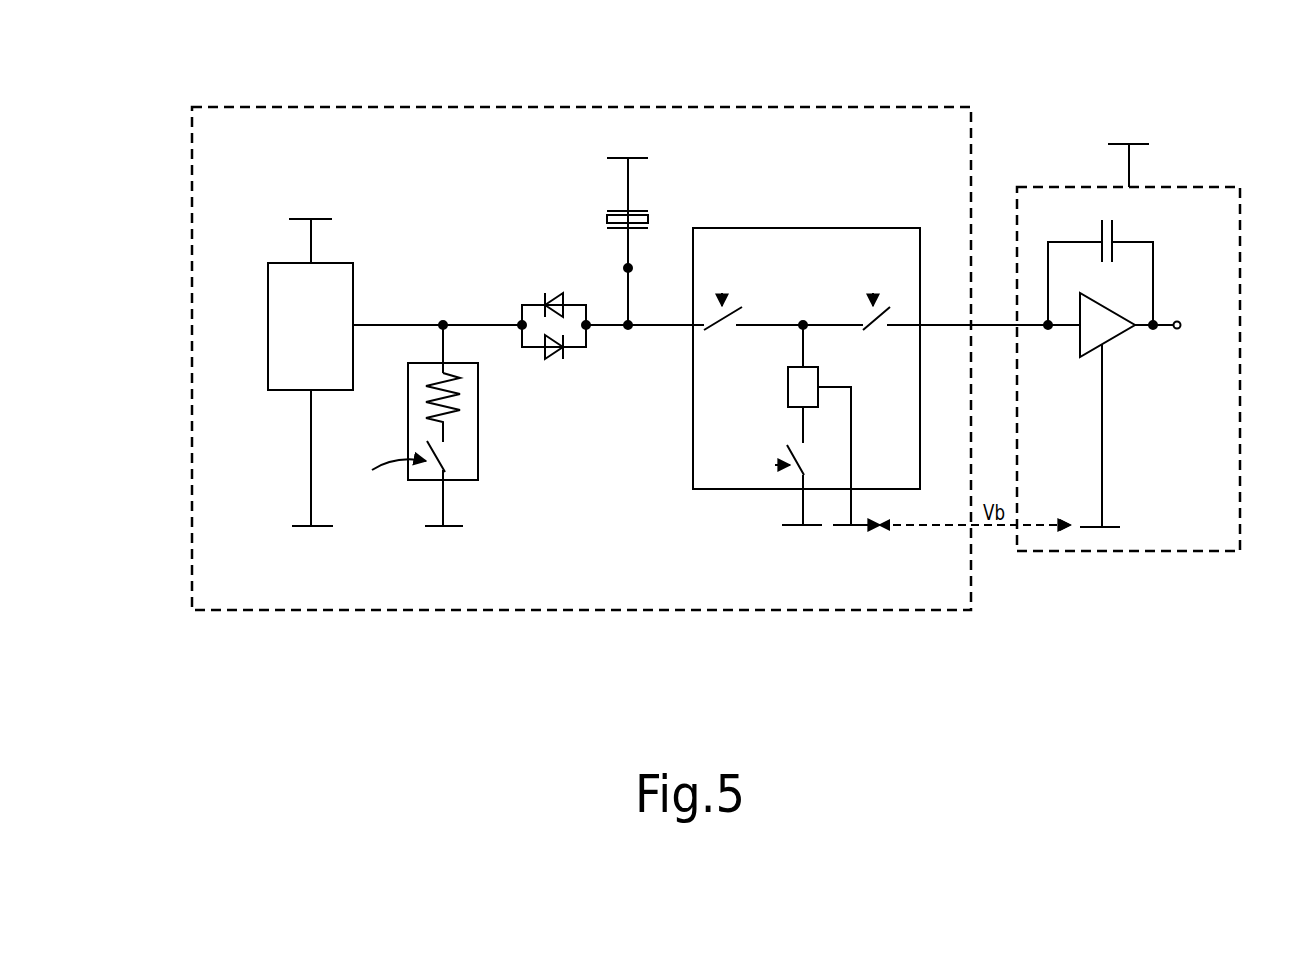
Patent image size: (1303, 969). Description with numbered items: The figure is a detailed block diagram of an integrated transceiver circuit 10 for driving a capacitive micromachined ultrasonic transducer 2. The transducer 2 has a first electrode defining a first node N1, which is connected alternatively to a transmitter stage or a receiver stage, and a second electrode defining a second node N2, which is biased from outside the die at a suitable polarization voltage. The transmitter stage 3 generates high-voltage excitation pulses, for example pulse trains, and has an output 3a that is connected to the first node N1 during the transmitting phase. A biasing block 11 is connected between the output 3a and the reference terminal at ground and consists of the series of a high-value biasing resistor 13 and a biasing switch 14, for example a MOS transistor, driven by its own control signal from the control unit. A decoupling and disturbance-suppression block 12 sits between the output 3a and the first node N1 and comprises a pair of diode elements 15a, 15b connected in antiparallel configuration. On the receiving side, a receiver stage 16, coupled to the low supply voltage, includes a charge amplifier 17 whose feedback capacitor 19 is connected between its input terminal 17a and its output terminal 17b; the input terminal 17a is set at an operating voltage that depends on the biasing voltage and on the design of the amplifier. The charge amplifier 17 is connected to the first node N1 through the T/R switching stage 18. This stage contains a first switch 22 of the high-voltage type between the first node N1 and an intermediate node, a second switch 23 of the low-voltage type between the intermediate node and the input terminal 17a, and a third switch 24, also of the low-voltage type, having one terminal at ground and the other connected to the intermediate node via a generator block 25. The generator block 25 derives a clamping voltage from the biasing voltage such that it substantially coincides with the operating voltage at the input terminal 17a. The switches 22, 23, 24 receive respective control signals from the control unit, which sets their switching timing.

The integrated transceiver circuit 10 is at (238, 86).
The transmitter stage 3 is at (348, 263).
The output 3a is at (443, 318).
The biasing block 11 is at (445, 441).
The biasing resistor 13 is at (433, 396).
The biasing switch 14 is at (448, 458).
The decoupling and disturbance-suppression block 12 is at (559, 314).
The diode element 15a is at (548, 294).
The diode element 15b is at (552, 358).
The CMUT transducer 2 is at (641, 229).
The first node N1 is at (632, 267).
The second node N2 is at (629, 158).
The T/R switching stage 18 is at (806, 394).
The first switch 22 is at (727, 322).
The second switch 23 is at (863, 325).
The third switch 24 is at (797, 456).
The generator block 25 is at (807, 375).
The receiver stage 16 is at (1128, 398).
The charge amplifier 17 is at (1112, 340).
The input terminal 17a is at (1048, 330).
The output terminal 17b is at (1177, 320).
The feedback capacitor 19 is at (1113, 228).